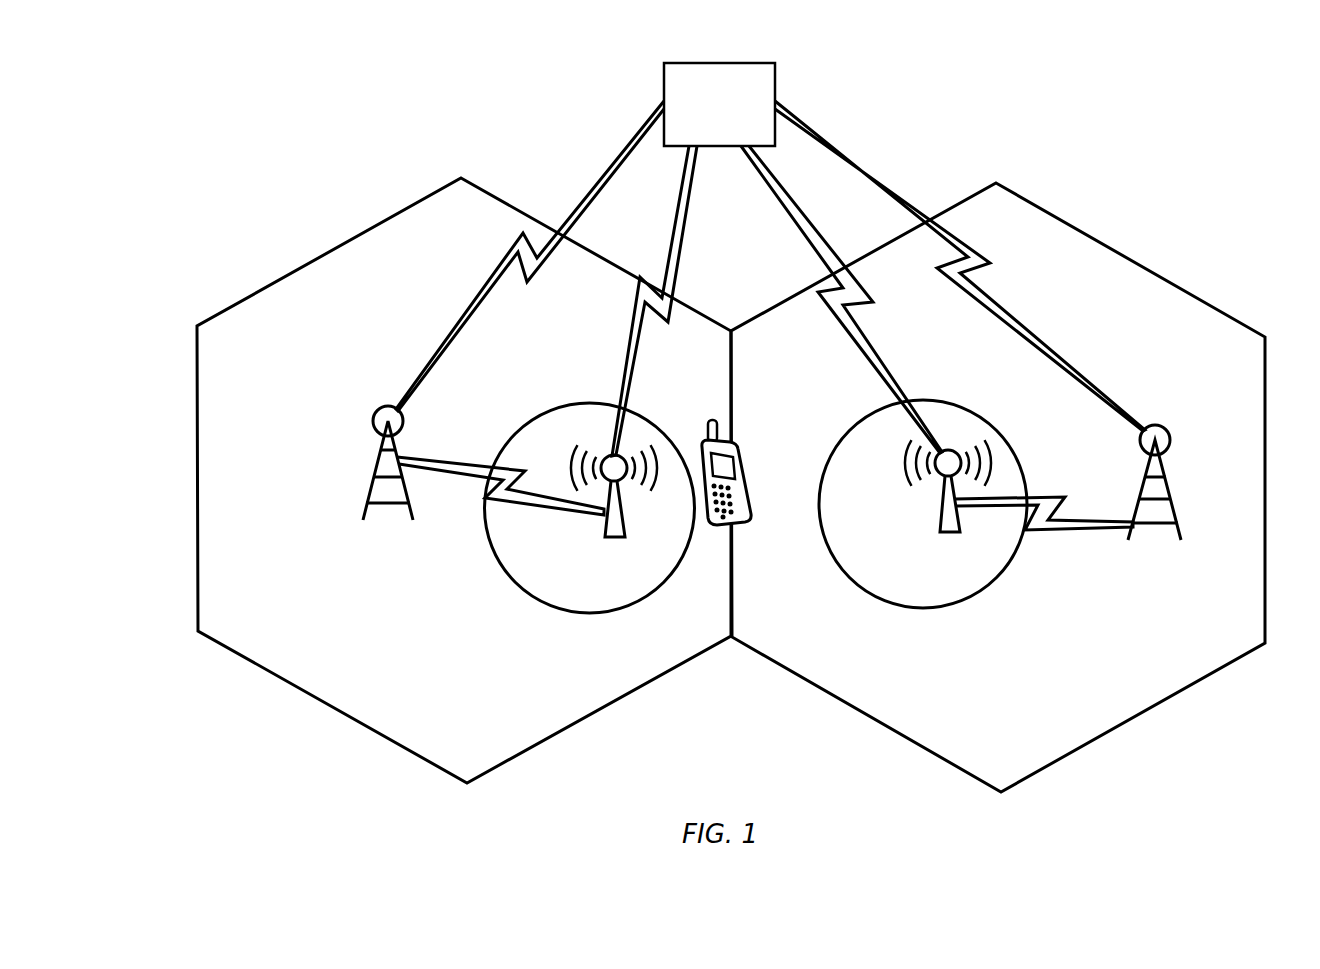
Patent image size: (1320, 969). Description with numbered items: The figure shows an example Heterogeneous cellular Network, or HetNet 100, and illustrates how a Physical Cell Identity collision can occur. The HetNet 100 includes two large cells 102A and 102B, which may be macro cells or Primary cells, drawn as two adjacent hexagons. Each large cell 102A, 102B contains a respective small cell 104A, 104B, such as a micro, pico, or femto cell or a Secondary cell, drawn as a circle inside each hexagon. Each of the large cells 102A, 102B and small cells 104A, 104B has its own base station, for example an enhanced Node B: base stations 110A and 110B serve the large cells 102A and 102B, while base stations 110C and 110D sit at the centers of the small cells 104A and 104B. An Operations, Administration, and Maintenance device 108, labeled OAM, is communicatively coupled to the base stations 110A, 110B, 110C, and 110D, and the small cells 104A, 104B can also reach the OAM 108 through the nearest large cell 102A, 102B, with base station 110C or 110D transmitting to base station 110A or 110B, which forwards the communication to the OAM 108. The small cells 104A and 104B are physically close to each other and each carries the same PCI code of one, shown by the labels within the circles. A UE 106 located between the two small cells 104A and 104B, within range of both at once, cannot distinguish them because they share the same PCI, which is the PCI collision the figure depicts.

The HetNet 100 is at (194, 135).
The large cell 102A is at (347, 269).
The large cell 102B is at (1013, 212).
The small cell 104A is at (557, 432).
The small cell 104B is at (868, 436).
The UE 106 is at (744, 459).
The Operations, Administration, and Maintenance device 108 is at (760, 104).
The base station 110A is at (390, 473).
The base station 110B is at (1157, 492).
The base station 110C is at (610, 508).
The base station 110D is at (948, 521).